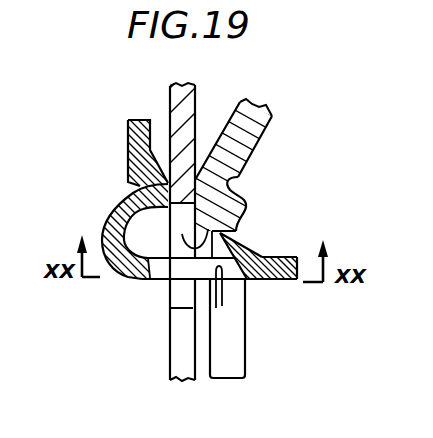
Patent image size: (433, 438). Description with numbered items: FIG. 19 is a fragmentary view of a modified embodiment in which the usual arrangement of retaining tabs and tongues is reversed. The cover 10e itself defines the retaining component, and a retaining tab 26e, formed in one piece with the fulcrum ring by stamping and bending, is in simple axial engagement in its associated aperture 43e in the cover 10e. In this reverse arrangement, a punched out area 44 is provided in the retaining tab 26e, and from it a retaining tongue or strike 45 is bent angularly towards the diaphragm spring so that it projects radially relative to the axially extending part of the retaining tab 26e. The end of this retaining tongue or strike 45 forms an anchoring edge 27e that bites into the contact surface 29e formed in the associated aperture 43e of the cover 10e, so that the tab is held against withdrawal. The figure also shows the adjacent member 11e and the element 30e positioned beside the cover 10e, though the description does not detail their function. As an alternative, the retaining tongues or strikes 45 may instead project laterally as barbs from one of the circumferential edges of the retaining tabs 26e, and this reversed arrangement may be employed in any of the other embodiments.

The cover 10e is at (270, 119).
The vertical bar member 11e is at (196, 113).
The retaining tab 26e is at (234, 283).
The anchoring edge 27e is at (234, 228).
The contact surface 29e is at (191, 231).
The ring block 30e is at (126, 139).
The aperture 43e is at (231, 298).
The punched out area 44 is at (153, 281).
The retaining tongue or strike 45 is at (247, 244).